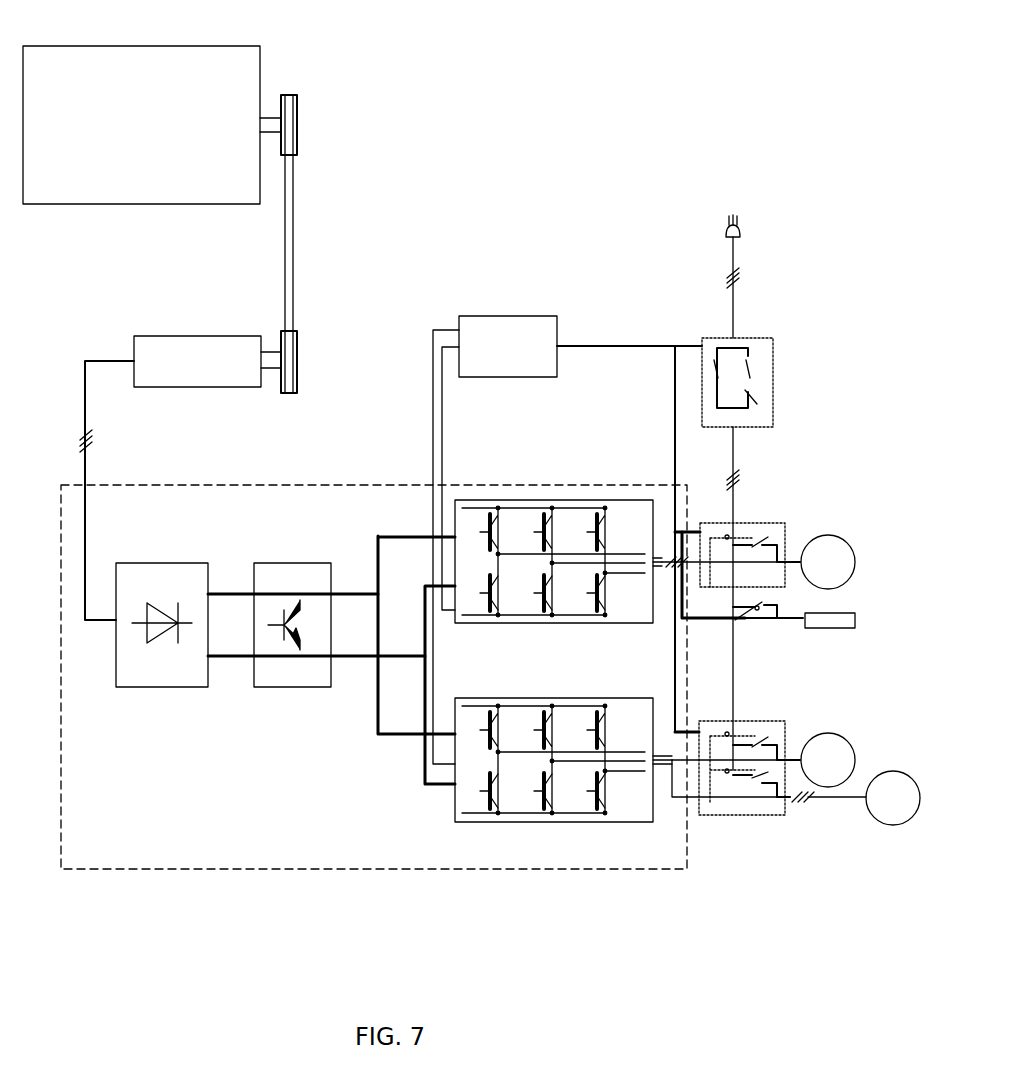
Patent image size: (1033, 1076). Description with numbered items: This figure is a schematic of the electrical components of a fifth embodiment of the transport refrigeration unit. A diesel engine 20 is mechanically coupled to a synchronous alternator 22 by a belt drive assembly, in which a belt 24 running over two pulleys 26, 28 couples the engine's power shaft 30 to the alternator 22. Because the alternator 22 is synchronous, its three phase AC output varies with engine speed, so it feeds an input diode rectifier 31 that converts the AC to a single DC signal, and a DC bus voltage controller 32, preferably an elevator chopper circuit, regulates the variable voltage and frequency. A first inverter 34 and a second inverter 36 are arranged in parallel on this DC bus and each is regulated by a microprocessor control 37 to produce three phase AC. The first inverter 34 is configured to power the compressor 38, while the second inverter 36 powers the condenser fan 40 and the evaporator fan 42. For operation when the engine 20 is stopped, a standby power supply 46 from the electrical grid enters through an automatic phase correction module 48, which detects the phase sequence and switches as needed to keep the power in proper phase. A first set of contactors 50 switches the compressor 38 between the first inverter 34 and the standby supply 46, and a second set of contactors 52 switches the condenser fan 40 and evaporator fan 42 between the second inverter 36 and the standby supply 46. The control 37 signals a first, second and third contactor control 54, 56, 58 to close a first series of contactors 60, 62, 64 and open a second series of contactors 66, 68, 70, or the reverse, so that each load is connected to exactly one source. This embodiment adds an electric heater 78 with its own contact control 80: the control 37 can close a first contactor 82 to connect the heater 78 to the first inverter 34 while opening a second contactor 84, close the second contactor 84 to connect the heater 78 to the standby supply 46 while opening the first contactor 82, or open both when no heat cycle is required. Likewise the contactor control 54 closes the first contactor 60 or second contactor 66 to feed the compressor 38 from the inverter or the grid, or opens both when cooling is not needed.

The diesel engine 20 is at (120, 48).
The synchronous alternator 22 is at (165, 338).
The belt 24 is at (296, 236).
The pulley 26 is at (300, 115).
The pulley 28 is at (300, 342).
The power shaft 30 is at (268, 110).
The input diode rectifier 31 is at (122, 688).
The DC bus voltage controller 32 is at (258, 688).
The first inverter 34 is at (477, 500).
The second inverter 36 is at (477, 698).
The microprocessor control 37 is at (480, 316).
The compressor 38 is at (843, 551).
The condenser fan 40 is at (832, 733).
The evaporator fan 42 is at (890, 823).
The standby power supply 46 is at (745, 225).
The automatic phase correction module 48 is at (773, 346).
The first set of contactors 50 is at (780, 521).
The second set of contactors 52 is at (780, 721).
The first contactor control 54 is at (725, 532).
The second contactor control 56 is at (725, 732).
The third contactor control 58 is at (727, 775).
The first contactor 60 is at (713, 562).
The contactor 62 is at (715, 757).
The contactor 64 is at (712, 800).
The second contactor 66 is at (765, 545).
The contactor 68 is at (766, 737).
The contactor 70 is at (758, 783).
The electric heater 78 is at (840, 613).
The contact control 80 is at (745, 613).
The first contactor 82 is at (762, 621).
The second contactor 84 is at (762, 606).